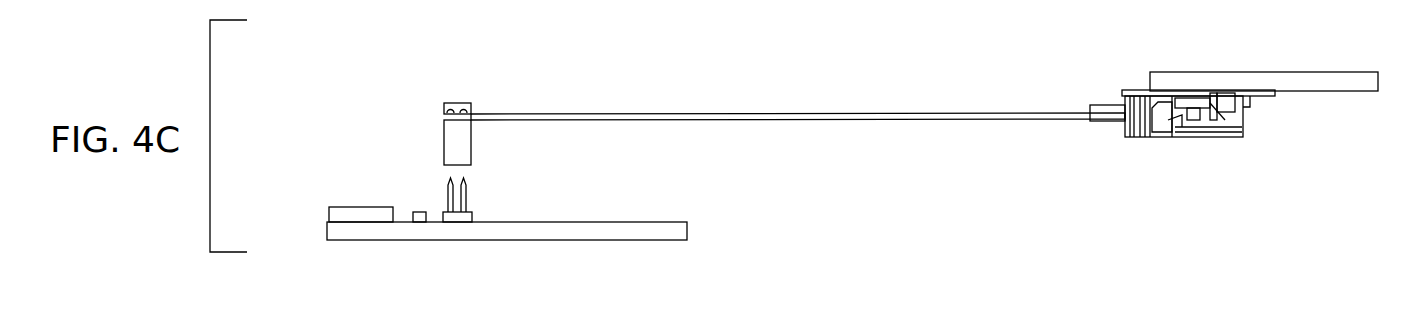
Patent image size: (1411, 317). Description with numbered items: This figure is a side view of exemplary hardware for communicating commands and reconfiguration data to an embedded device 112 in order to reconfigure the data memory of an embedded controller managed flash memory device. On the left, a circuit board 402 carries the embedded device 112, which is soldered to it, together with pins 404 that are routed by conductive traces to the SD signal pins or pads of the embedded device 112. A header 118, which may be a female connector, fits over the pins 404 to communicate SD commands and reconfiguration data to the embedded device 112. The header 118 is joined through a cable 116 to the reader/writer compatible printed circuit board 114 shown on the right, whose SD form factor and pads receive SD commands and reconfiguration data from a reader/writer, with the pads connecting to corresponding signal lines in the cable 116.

The embedded device 112 is at (346, 207).
The reader/writer compatible printed circuit board 114 is at (1315, 72).
The cable 116 is at (628, 114).
The header 118 is at (444, 140).
The circuit board 402 is at (617, 222).
The pins 404 is at (467, 190).